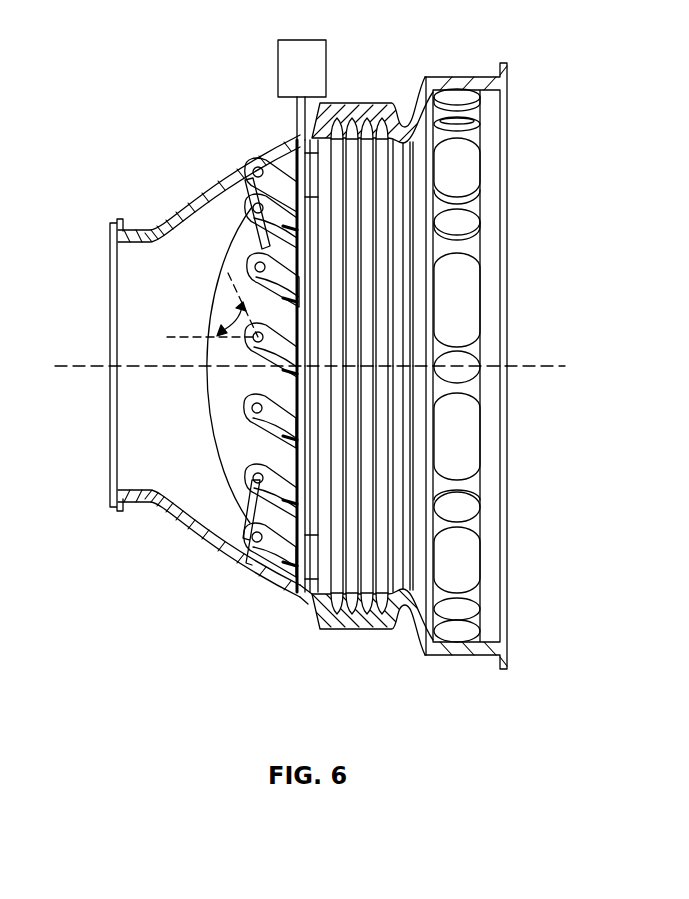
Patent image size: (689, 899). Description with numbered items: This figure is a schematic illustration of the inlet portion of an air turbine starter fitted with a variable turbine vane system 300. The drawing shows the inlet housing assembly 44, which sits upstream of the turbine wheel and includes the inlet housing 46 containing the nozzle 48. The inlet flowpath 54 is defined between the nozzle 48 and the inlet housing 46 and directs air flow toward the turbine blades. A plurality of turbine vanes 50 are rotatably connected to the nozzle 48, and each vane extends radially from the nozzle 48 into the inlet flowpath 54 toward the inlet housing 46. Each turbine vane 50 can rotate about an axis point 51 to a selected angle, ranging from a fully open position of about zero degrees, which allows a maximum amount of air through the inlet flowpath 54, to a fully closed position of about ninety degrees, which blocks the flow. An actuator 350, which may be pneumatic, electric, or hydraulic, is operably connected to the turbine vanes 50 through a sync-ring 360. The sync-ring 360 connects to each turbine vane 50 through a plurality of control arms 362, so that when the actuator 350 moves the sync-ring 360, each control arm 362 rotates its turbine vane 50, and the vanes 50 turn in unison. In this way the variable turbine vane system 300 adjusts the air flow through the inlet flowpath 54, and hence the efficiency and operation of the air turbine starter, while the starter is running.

The variable turbine vane system 300 is at (137, 51).
The actuator 350 is at (278, 68).
The turbine vanes 50 is at (257, 170).
The nozzle 48 is at (222, 282).
The axis point 51 is at (252, 340).
The control arms 362 is at (263, 388).
The inlet flowpath 54 is at (125, 453).
The inlet housing 46 is at (190, 515).
The inlet housing assembly 44 is at (182, 601).
The sync-ring 360 is at (300, 587).
The central axis A is at (537, 368).